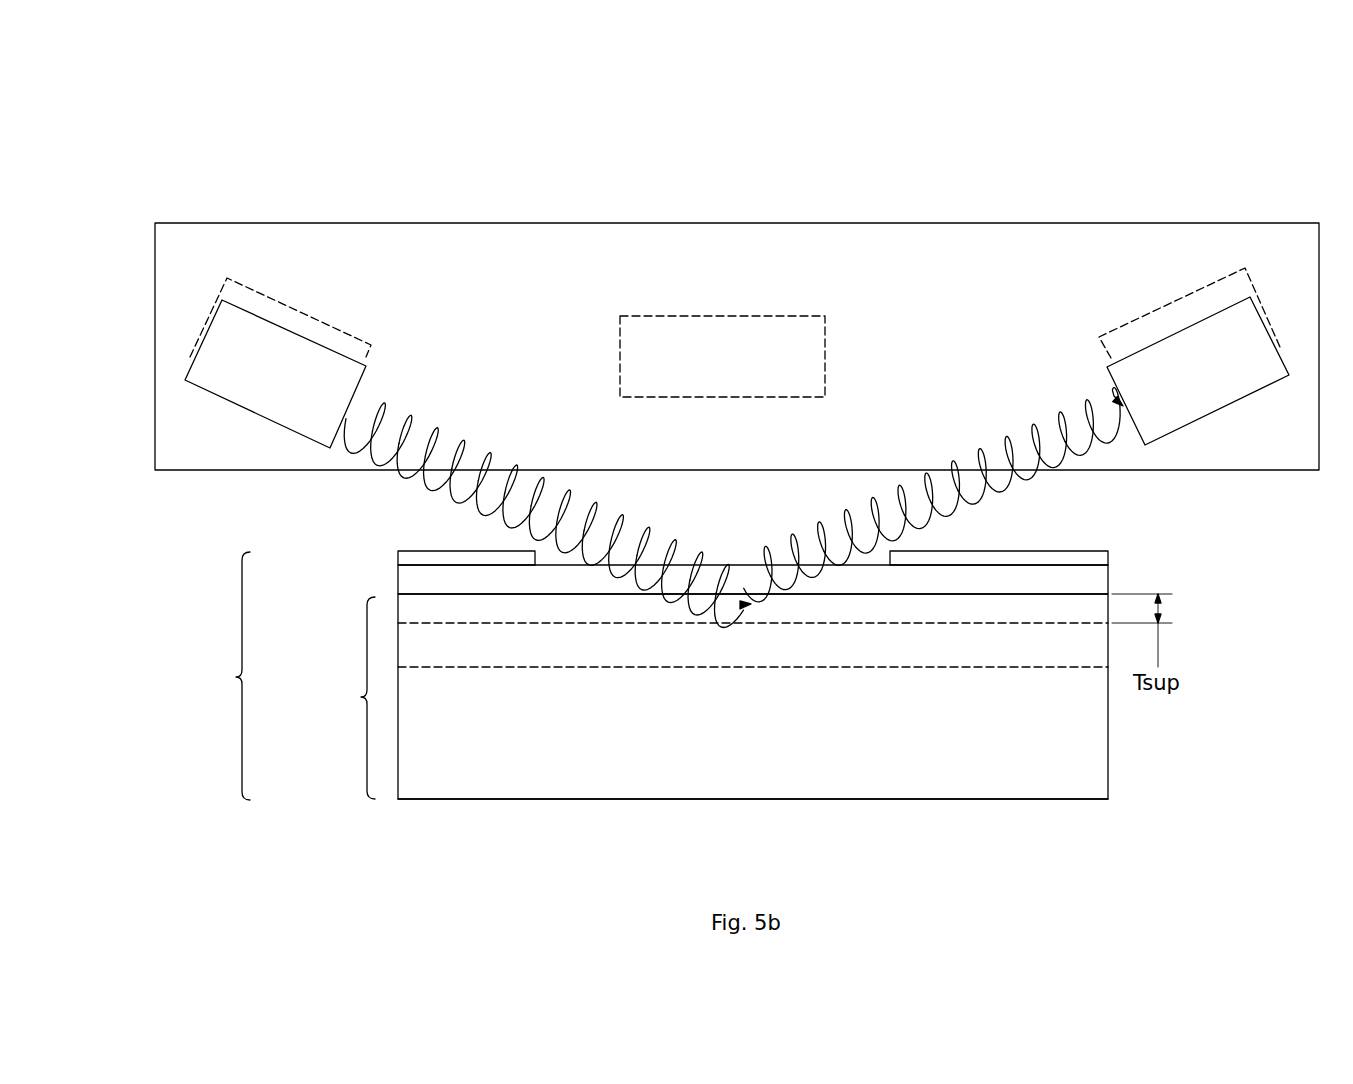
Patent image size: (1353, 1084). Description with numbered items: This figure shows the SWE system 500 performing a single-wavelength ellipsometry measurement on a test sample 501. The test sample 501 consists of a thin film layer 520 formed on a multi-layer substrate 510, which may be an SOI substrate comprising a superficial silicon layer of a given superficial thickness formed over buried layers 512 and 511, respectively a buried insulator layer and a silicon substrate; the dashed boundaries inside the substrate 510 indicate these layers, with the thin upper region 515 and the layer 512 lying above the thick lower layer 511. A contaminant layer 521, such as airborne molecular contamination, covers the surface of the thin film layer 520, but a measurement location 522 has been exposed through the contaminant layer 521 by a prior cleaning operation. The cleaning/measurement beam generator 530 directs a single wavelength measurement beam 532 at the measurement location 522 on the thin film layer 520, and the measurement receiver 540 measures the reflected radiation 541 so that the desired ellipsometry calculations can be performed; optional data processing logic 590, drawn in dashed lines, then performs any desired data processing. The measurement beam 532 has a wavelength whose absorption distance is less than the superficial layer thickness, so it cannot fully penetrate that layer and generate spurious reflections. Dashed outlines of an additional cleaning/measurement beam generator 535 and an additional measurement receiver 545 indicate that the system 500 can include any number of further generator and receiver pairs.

The SWE system 500 is at (162, 128).
The test sample 501 is at (219, 676).
The multi-layer substrate 510 is at (710, 696).
The buried layer 511 is at (445, 785).
The buried layer 512 is at (445, 660).
The top layer 515 is at (445, 623).
The thin film layer 520 is at (1108, 570).
The contaminant layer 521 is at (1108, 555).
The measurement location 522 is at (737, 563).
The cleaning/measurement beam generator 530 is at (302, 388).
The measurement beam 532 is at (448, 497).
The additional cleaning/measurement beam generator 535 is at (267, 298).
The measurement receiver 540 is at (1222, 380).
The reflected light beam 541 is at (997, 483).
The additional measurement receiver 545 is at (1137, 320).
The data processing logic 590 is at (743, 368).